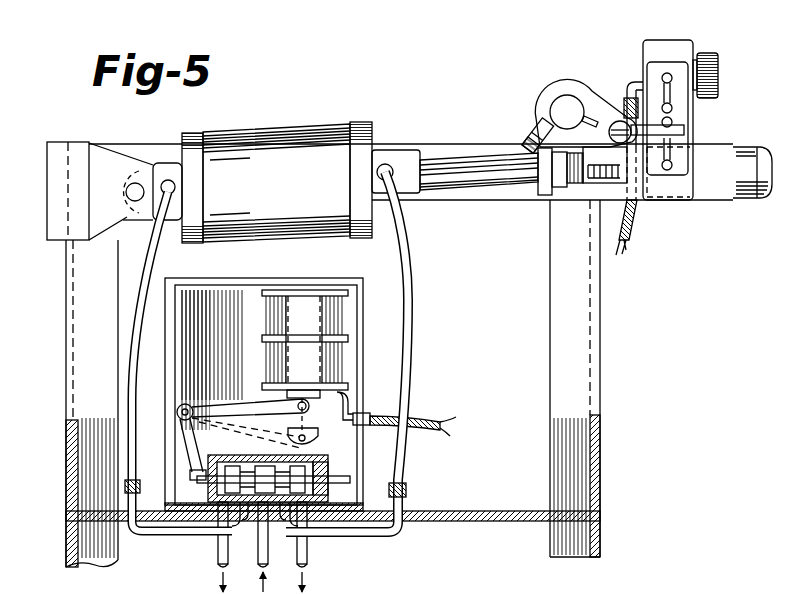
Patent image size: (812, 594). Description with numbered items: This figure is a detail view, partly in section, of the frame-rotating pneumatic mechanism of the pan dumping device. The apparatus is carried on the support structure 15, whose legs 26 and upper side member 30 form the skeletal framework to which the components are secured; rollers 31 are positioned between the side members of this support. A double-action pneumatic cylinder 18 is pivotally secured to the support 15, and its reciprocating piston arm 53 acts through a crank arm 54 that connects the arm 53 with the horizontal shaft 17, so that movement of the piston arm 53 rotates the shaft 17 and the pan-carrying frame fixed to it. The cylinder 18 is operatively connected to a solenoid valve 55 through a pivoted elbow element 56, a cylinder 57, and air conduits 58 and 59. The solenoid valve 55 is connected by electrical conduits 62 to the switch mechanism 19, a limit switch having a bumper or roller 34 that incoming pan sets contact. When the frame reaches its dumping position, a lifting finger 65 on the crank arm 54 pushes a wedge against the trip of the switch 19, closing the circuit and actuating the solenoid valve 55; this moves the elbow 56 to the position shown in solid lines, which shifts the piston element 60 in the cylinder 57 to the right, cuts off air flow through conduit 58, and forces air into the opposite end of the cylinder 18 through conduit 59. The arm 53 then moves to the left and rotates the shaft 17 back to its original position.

The support structure 15 is at (64, 390).
The horizontal shaft 17 is at (567, 110).
The pneumatic cylinder 18 is at (296, 131).
The switch mechanism 19 is at (678, 40).
The legs 26 is at (64, 297).
The upper side member 30 is at (490, 200).
The rollers 31 is at (750, 148).
The bumper or roller 34 is at (719, 68).
The piston arm 53 is at (456, 160).
The crank arm 54 is at (620, 120).
The solenoid valve 55 is at (305, 300).
The pivoted elbow element 56 is at (218, 406).
The cylinder 57 is at (318, 462).
The air conduit 58 is at (157, 263).
The air conduit 59 is at (412, 249).
The piston element 60 is at (215, 466).
The electrical conduits 62 is at (431, 414).
The lifting finger 65 is at (688, 126).